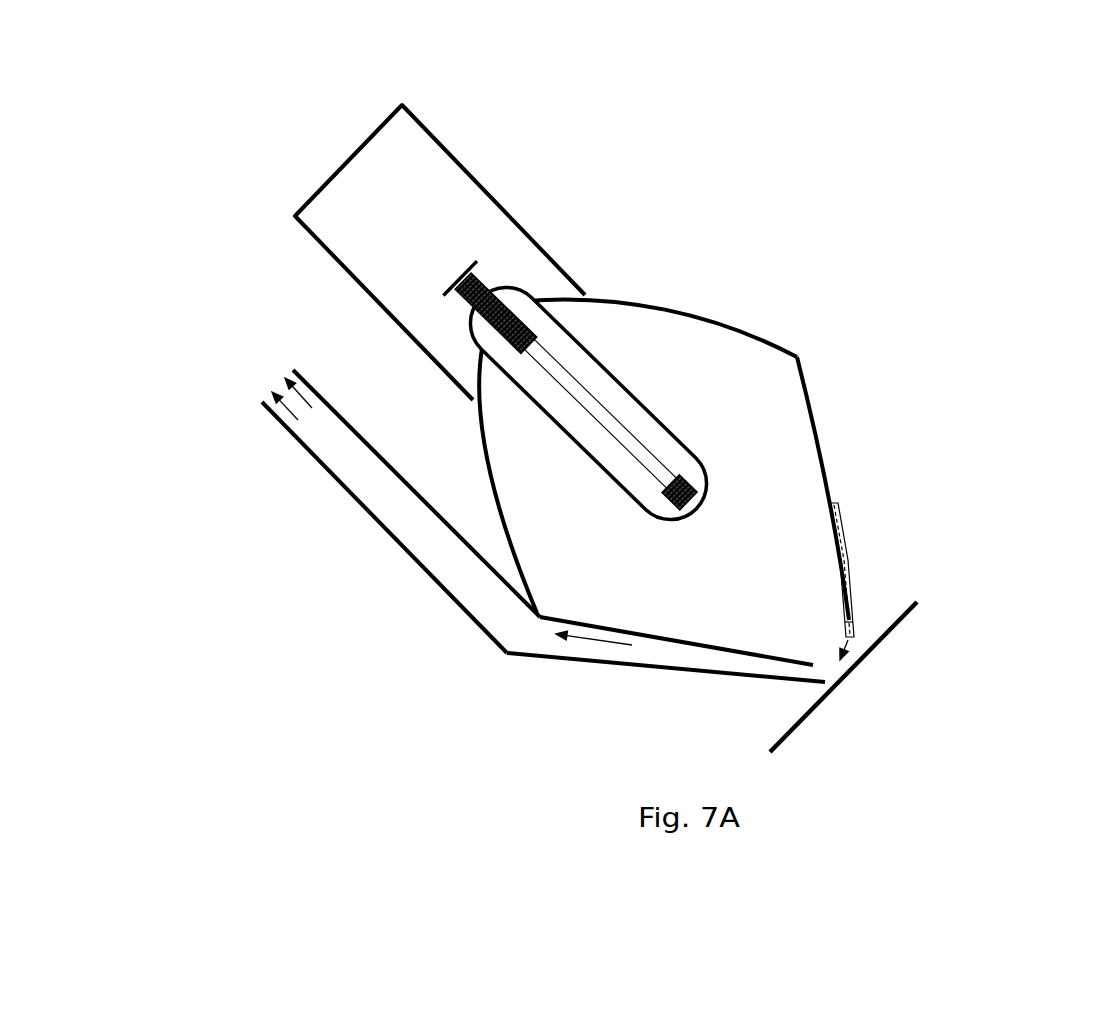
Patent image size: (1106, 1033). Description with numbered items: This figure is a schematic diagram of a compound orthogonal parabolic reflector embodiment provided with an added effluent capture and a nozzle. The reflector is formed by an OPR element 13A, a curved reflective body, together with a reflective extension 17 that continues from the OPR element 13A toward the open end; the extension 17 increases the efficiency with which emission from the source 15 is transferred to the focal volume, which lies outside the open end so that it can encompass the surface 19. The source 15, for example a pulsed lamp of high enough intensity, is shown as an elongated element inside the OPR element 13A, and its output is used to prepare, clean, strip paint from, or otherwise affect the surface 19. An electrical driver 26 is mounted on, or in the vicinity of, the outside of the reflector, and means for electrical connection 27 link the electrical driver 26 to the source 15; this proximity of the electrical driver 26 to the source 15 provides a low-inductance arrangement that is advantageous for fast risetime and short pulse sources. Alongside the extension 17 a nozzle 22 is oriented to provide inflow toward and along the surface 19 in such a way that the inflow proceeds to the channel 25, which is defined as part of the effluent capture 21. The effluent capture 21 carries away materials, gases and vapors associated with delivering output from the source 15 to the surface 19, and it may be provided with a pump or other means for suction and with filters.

The electrical driver 26 is at (443, 153).
The electrical connection 27 is at (490, 255).
The source 15 is at (640, 376).
The OPR element 13A is at (776, 332).
The extension 17 is at (833, 465).
The nozzle 22 is at (852, 535).
The surface 19 is at (873, 663).
The effluent capture 21 is at (324, 470).
The channel 25 is at (712, 666).